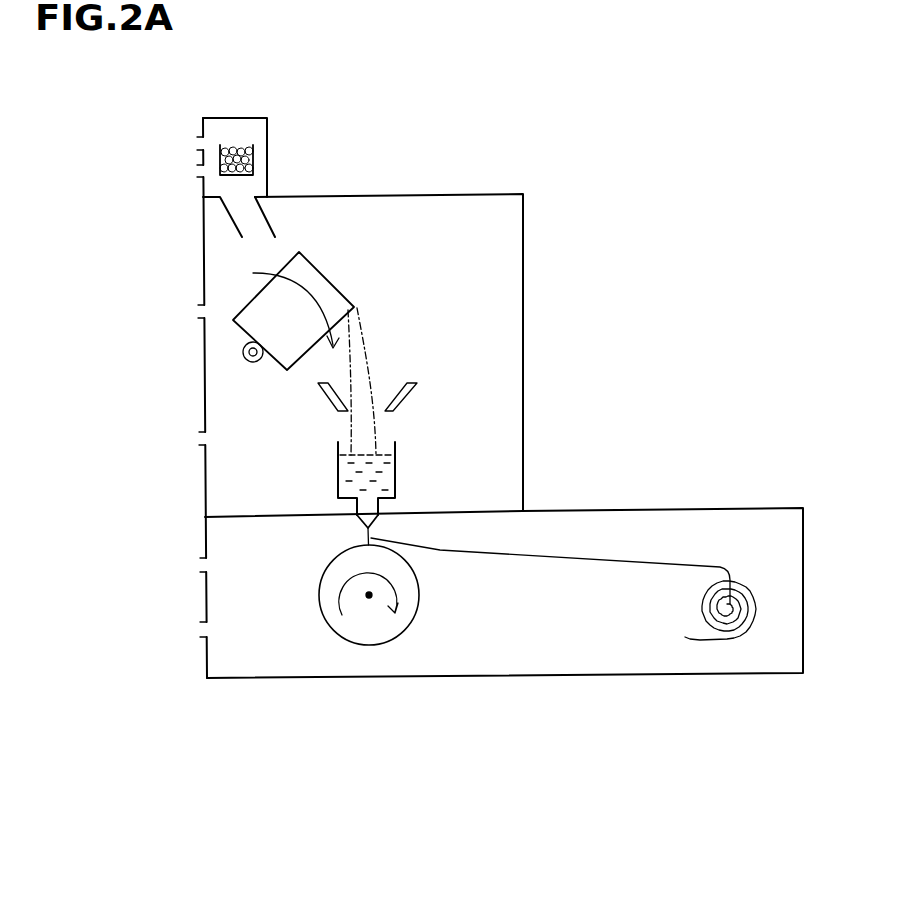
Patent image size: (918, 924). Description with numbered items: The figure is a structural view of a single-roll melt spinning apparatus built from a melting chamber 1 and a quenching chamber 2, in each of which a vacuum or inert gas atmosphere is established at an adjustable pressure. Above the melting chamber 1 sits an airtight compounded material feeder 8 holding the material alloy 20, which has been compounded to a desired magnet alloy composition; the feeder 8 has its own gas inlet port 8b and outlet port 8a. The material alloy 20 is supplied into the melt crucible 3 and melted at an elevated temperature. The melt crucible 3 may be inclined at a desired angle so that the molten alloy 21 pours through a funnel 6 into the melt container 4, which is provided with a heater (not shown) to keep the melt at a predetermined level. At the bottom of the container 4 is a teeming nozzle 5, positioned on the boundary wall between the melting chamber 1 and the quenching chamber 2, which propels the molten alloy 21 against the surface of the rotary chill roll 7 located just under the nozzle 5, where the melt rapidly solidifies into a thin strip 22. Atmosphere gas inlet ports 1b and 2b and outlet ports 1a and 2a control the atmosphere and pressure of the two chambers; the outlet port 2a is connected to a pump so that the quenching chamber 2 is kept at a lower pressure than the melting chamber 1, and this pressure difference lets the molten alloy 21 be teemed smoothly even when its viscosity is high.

The melting chamber 1 is at (523, 260).
The outlet port 1a is at (215, 438).
The gas inlet port 1b is at (208, 316).
The quenching chamber 2 is at (660, 510).
The outlet port 2a is at (222, 630).
The gas inlet port 2b is at (213, 569).
The melt crucible 3 is at (296, 330).
The melt container 4 is at (395, 468).
The teeming nozzle 5 is at (362, 523).
The funnel 6 is at (318, 392).
The rotary chill roll 7 is at (319, 590).
The compounded material feeder 8 is at (232, 118).
The outlet port 8a is at (217, 172).
The gas inlet port 8b is at (210, 148).
The material alloy 20 is at (253, 156).
The molten alloy 21 is at (338, 468).
The thin strip 22 is at (500, 556).